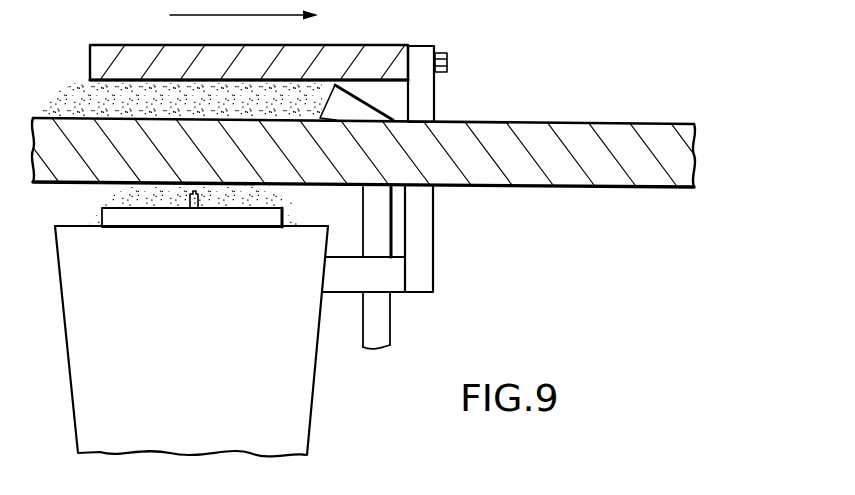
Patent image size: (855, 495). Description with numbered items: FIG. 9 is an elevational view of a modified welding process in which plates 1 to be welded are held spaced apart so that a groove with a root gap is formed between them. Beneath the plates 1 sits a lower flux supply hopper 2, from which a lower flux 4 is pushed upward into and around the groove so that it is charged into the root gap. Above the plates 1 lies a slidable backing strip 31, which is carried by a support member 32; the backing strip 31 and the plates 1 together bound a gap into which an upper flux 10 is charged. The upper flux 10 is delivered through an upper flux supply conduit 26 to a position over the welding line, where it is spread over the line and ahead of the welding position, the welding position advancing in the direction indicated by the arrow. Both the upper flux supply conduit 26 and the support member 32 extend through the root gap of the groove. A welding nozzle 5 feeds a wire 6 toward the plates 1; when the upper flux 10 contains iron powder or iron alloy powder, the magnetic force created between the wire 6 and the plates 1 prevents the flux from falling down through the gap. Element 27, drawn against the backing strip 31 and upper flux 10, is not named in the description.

The plate 1 is at (518, 131).
The lower flux supply hopper 2 is at (192, 342).
The lower flux 4 is at (118, 199).
The welding nozzle 5 is at (192, 209).
The wire 6 is at (197, 192).
The upper flux 10 is at (68, 89).
The upper flux supply conduit 26 is at (383, 327).
The scraper 27 is at (350, 109).
The slidable backing strip 31 is at (357, 51).
The support member 32 is at (430, 251).